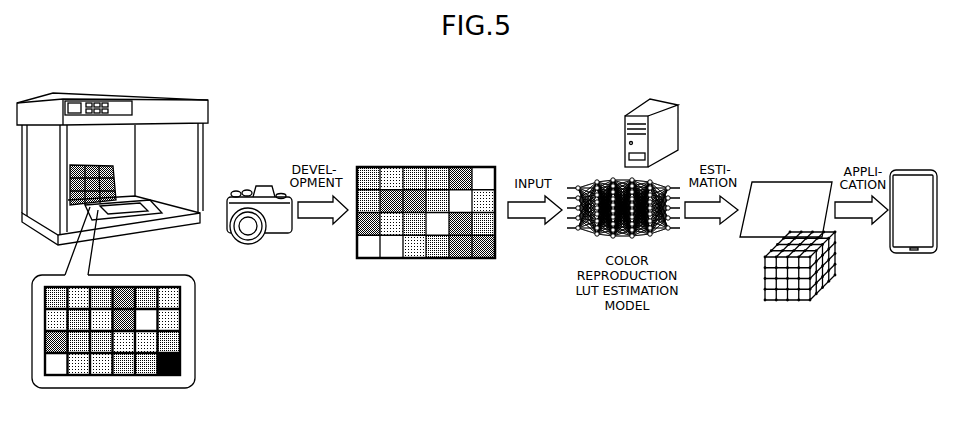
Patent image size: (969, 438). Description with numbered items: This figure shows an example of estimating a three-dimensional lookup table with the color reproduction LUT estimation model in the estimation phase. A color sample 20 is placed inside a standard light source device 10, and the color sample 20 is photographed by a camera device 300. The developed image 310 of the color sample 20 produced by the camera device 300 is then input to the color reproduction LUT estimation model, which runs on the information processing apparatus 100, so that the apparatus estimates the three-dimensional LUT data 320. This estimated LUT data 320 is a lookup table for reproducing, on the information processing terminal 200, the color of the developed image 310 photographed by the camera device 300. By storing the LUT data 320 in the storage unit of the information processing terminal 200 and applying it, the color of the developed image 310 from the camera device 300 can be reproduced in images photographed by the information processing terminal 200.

The standard light source device 10 is at (113, 96).
The color sample 20 is at (120, 377).
The camera device 300 is at (261, 185).
The developed image 310 is at (468, 167).
The information processing apparatus 100 is at (645, 106).
The 3D-LUT data 320 is at (799, 181).
The information processing terminal 200 is at (907, 170).